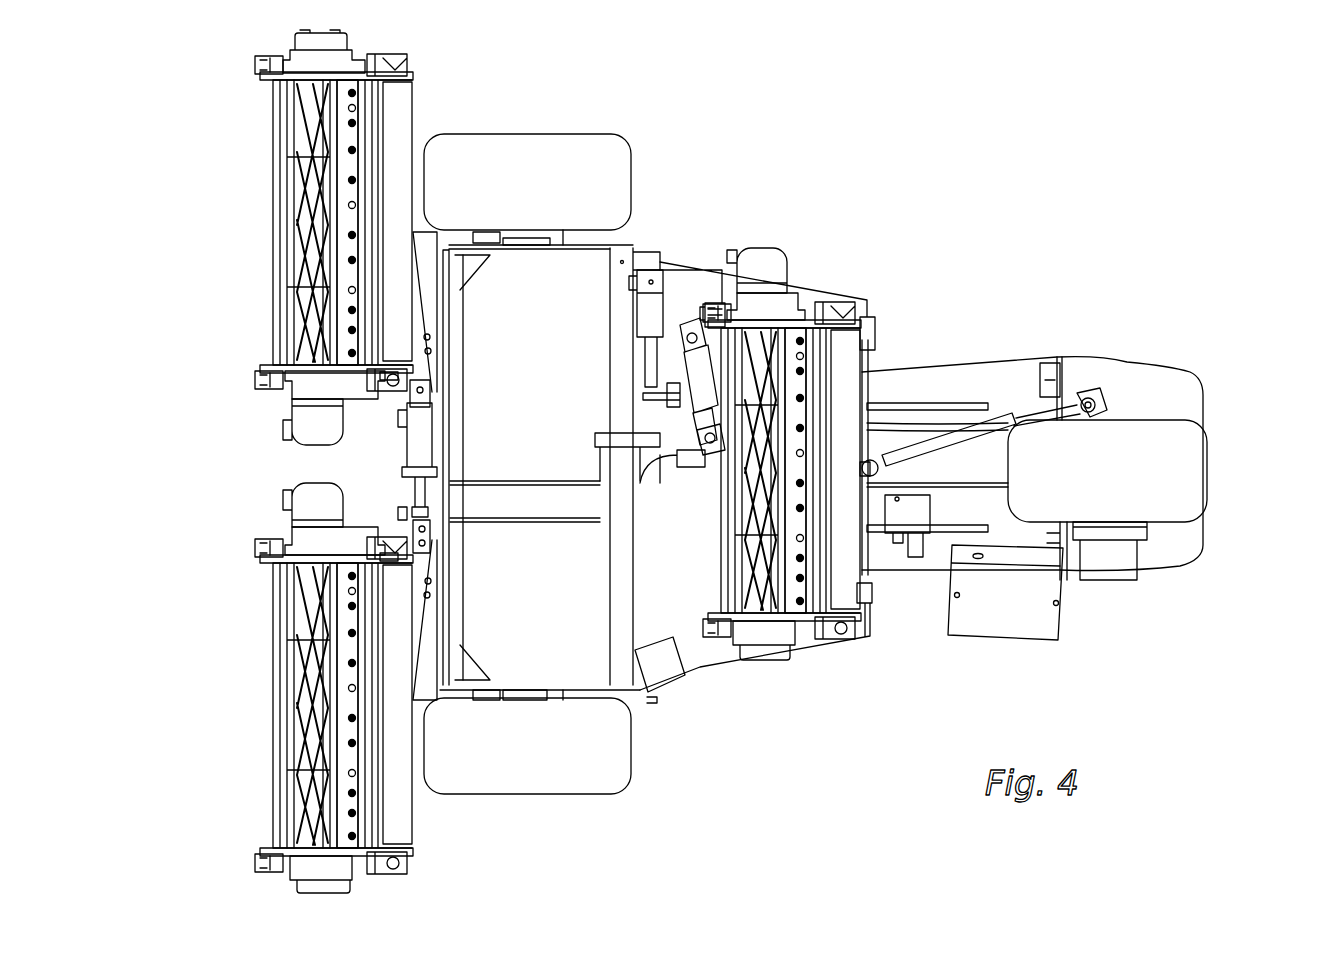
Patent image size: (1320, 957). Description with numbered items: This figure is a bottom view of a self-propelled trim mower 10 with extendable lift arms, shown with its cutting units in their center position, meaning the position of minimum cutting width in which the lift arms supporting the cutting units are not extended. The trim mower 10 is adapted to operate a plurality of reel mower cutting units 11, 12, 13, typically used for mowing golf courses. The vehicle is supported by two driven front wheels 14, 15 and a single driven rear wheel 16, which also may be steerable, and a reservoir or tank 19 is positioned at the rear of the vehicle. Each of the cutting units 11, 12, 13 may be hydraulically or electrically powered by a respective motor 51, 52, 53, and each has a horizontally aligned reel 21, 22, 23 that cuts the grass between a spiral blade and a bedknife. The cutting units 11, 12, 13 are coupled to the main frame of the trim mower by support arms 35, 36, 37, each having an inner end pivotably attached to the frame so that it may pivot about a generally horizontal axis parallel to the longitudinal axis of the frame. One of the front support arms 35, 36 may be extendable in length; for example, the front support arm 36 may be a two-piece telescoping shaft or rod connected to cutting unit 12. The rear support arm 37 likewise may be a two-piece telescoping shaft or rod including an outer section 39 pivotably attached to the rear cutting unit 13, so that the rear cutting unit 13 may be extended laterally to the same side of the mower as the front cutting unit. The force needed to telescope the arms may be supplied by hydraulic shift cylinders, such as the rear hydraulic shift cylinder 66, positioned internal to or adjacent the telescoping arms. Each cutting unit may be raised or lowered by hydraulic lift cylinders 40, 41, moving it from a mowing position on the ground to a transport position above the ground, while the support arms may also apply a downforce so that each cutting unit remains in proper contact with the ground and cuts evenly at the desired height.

The self-propelled trim mower 10 is at (709, 461).
The cutting unit 11 is at (274, 237).
The cutting unit 12 is at (277, 688).
The cutting unit 13 is at (768, 426).
The front wheel 14 is at (565, 148).
The front wheel 15 is at (565, 790).
The rear wheel 16 is at (1195, 447).
The reservoir or tank 19 is at (1130, 370).
The reel 21 is at (290, 150).
The reel 22 is at (293, 662).
The reel 23 is at (742, 575).
The front support arm 35 is at (440, 372).
The front support arm 36 is at (420, 560).
The rear support arm 37 is at (670, 375).
The outer section 39 is at (657, 483).
The hydraulic lift cylinder 40 is at (420, 430).
The hydraulic lift cylinder 41 is at (648, 313).
The motor 51 is at (295, 410).
The motor 52 is at (298, 508).
The motor 53 is at (782, 262).
The rear hydraulic shift cylinder 66 is at (708, 318).